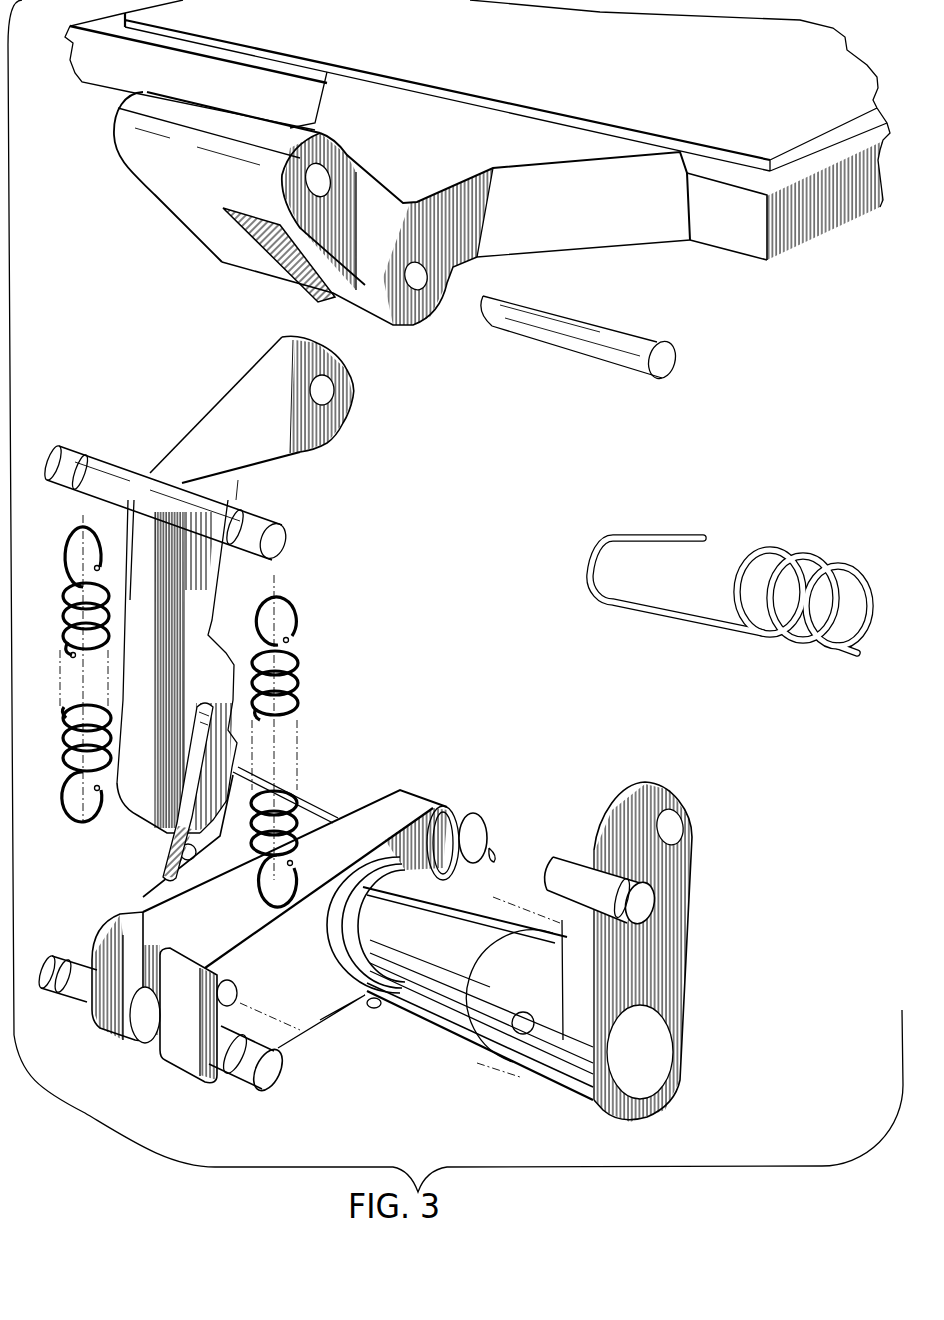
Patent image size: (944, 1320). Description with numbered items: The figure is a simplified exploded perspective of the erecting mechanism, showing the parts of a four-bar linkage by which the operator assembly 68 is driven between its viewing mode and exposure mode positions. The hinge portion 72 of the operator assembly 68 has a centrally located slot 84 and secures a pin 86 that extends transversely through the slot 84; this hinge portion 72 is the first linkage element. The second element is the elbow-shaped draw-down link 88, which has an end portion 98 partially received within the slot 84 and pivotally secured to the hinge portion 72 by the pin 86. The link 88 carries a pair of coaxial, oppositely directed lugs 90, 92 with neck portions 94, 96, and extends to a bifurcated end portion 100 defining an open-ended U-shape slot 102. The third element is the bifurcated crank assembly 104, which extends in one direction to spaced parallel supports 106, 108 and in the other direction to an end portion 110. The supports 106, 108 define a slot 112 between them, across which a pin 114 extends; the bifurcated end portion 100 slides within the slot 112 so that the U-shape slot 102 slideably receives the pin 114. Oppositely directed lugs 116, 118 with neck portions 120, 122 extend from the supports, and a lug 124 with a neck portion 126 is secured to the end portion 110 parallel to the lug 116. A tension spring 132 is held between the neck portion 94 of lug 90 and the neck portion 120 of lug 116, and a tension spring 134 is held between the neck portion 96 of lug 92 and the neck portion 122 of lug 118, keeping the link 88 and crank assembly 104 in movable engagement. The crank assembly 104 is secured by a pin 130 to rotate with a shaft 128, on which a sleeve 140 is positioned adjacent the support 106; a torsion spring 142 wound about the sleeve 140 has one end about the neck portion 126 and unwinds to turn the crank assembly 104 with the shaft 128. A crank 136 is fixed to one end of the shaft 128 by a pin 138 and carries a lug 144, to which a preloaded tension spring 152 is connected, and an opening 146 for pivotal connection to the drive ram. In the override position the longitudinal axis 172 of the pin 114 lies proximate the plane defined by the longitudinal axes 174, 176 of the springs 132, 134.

The operator assembly 68 is at (795, 255).
The hinge portion 72 is at (150, 199).
The slot 84 is at (290, 284).
The pin 86 is at (610, 323).
The draw-down link 88 is at (270, 496).
The lug 90 is at (286, 526).
The lug 92 is at (72, 452).
The neck portion 94 is at (243, 497).
The neck portion 96 is at (95, 462).
The end portion 98 is at (258, 373).
The bifurcated end portion 100 is at (130, 783).
The U-shape slot 102 is at (177, 822).
The bifurcated crank assembly 104 is at (327, 795).
The support 106 is at (307, 1023).
The support 108 is at (130, 920).
The end portion 110 is at (393, 790).
The slot 112 is at (143, 1047).
The pin 114 is at (180, 950).
The lug 116 is at (233, 1087).
The lug 118 is at (52, 953).
The neck portion 120 is at (230, 1073).
The neck portion 122 is at (58, 993).
The lug 124 is at (490, 826).
The neck portion 126 is at (477, 805).
The shaft 128 is at (657, 1070).
The pin 130 is at (181, 857).
The tension spring 132 is at (298, 680).
The tension spring 134 is at (62, 633).
The crank 136 is at (676, 972).
The pin 138 is at (520, 1032).
The sleeve 140 is at (453, 1017).
The torsion spring 142 is at (371, 1007).
The lug 144 is at (569, 858).
The opening 146 is at (684, 832).
The preloaded tension spring 152 is at (803, 556).
The longitudinal axis 172 is at (240, 1003).
The longitudinal axis 174 is at (277, 582).
The longitudinal axis 176 is at (76, 512).